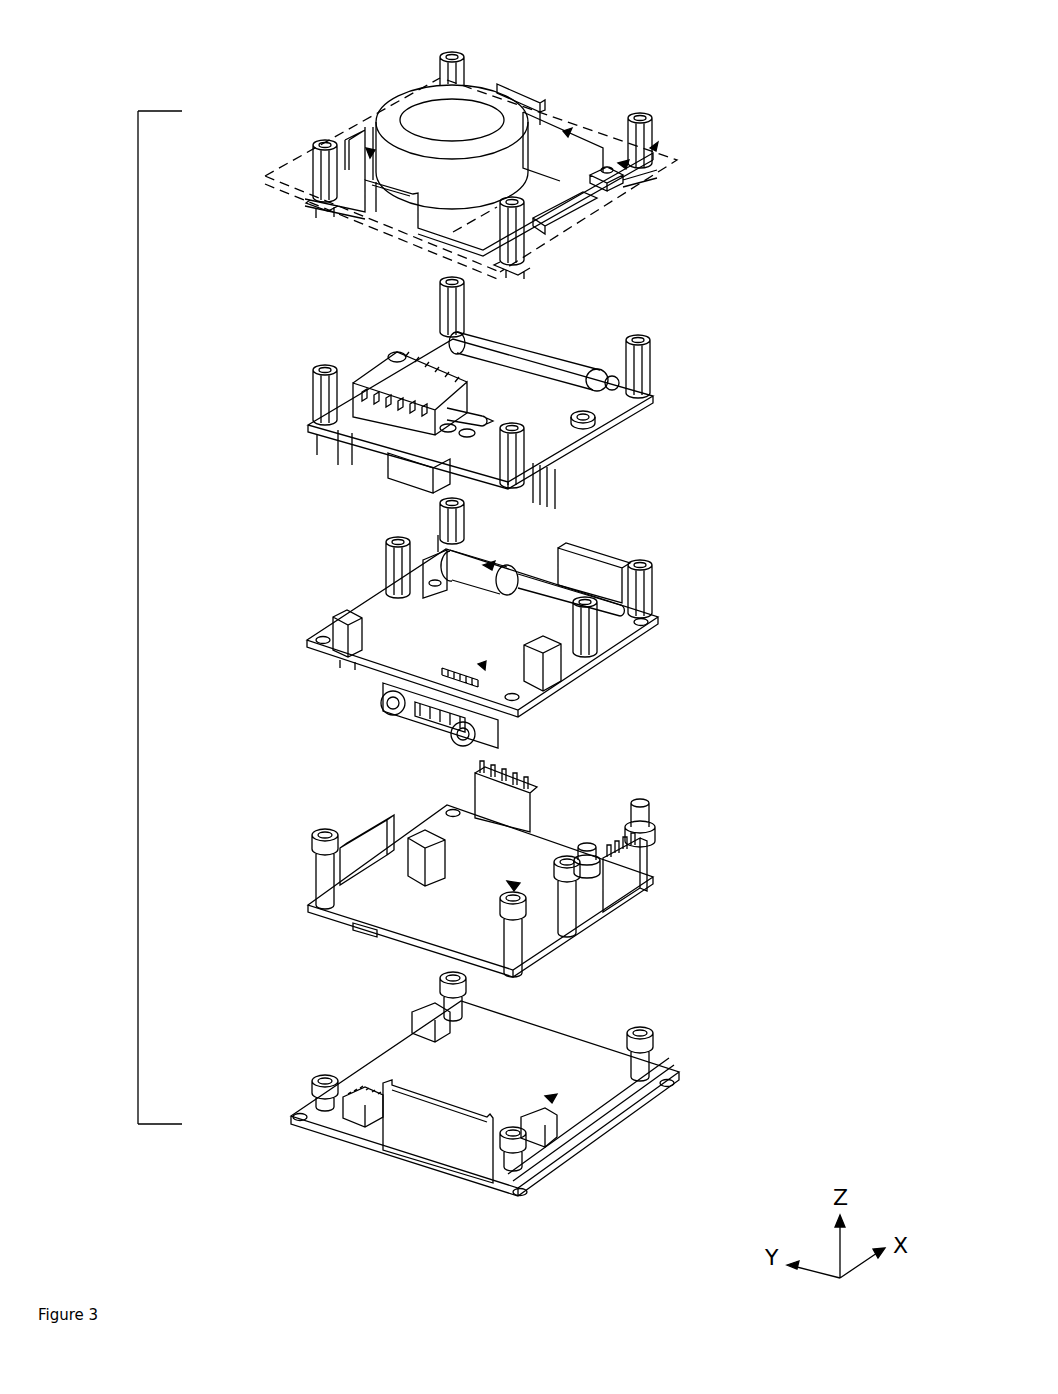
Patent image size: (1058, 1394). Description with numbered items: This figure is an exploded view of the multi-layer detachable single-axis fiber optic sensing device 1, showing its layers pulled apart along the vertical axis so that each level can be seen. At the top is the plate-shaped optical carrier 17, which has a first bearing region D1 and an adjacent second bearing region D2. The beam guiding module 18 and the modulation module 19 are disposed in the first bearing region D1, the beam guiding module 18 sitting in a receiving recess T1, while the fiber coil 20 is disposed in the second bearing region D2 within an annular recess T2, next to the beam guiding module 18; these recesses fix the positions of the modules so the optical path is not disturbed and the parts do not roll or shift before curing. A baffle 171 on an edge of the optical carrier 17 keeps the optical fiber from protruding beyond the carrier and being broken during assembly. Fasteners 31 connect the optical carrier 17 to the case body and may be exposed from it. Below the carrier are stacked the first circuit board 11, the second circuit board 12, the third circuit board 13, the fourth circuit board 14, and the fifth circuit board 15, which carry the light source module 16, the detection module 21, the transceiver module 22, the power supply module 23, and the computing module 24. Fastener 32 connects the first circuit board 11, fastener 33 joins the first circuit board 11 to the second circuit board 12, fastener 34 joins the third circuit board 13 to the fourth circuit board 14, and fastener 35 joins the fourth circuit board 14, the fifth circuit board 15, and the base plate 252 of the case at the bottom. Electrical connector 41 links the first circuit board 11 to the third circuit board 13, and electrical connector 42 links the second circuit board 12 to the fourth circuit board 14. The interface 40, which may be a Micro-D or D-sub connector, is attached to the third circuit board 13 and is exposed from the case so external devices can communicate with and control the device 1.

The multi-layer detachable single-axis fiber optic sensing device 1 is at (137, 542).
The first circuit board 11 is at (615, 403).
The second circuit board 12 is at (608, 625).
The third circuit board 13 is at (410, 650).
The fourth circuit board 14 is at (612, 915).
The fifth circuit board 15 is at (600, 1107).
The light source module 16 is at (380, 375).
The optical carrier 17 is at (522, 128).
The baffle 171 is at (390, 213).
The beam guiding module 18 is at (540, 250).
The modulation module 19 is at (625, 147).
The fiber coil 20 is at (417, 93).
The detection module 21 is at (487, 563).
The transceiver module 22 is at (486, 661).
The power supply module 23 is at (512, 884).
The computing module 24 is at (545, 1096).
The base plate 252 is at (555, 1177).
The fastener 31 is at (318, 150).
The fastener 32 is at (318, 402).
The fastener 33 is at (580, 647).
The fastener 34 is at (318, 883).
The fastener 35 is at (657, 1063).
The interface 40 is at (423, 710).
The electrical connector 41 is at (337, 640).
The electrical connector 42 is at (622, 875).
The first bearing region D1 is at (650, 148).
The second bearing region D2 is at (568, 137).
The receiving recess T1 is at (620, 163).
The annular recess T2 is at (370, 158).